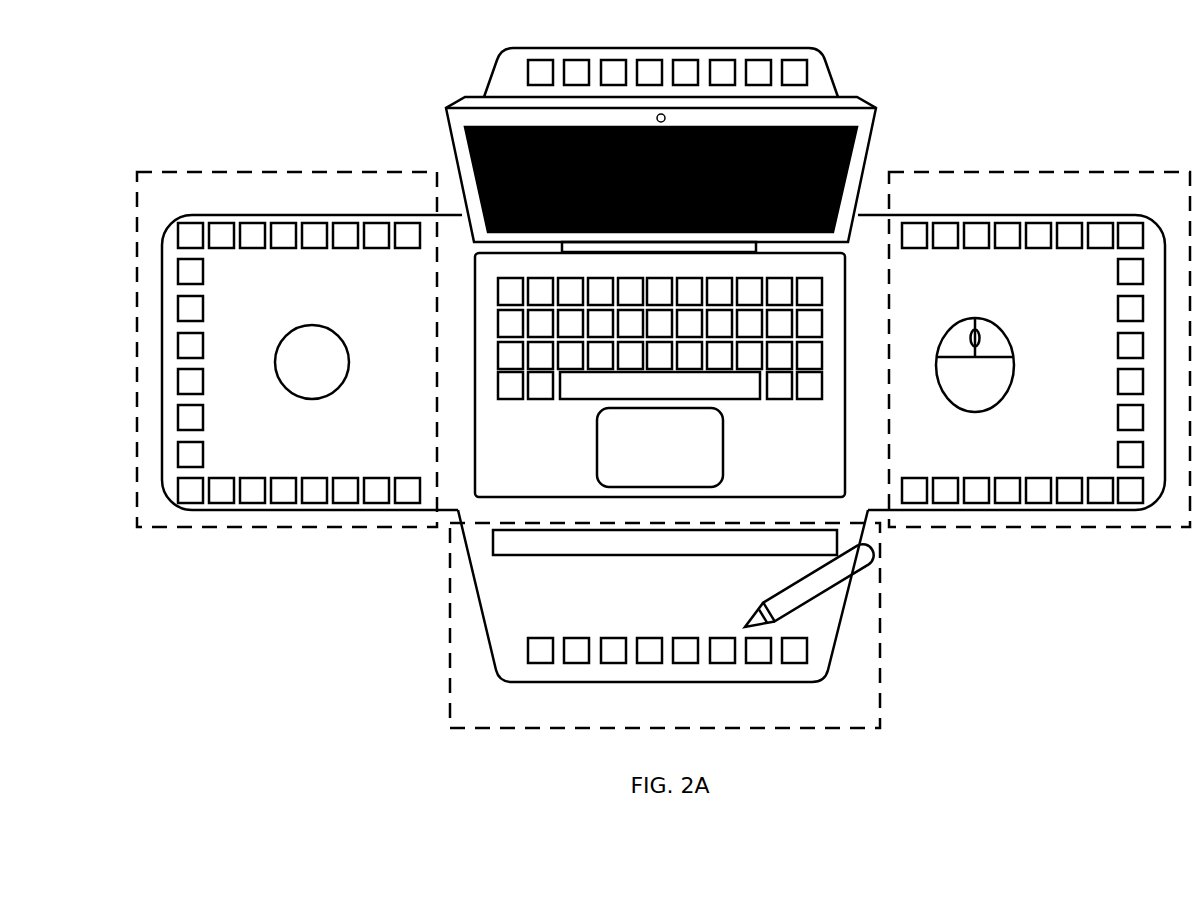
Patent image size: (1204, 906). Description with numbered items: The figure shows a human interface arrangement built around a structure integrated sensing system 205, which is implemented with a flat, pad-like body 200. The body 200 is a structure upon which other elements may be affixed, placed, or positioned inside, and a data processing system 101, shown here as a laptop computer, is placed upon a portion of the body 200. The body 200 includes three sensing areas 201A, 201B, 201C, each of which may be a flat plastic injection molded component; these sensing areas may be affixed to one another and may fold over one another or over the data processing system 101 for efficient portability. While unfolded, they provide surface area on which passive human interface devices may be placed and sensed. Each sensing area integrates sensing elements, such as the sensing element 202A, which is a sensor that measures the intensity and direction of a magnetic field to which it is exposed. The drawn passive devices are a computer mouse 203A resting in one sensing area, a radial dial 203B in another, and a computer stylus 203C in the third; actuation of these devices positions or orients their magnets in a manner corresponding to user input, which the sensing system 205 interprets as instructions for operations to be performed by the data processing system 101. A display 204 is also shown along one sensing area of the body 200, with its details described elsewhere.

The data processing system 101 is at (457, 134).
The body 200 is at (864, 264).
The sensing area 201A is at (1039, 349).
The sensing area 201B is at (287, 349).
The sensing area 201C is at (665, 625).
The sensing element 202A is at (1022, 488).
The computer mouse 203A is at (998, 387).
The radial dial 203B is at (318, 380).
The computer stylus 203C is at (835, 573).
The display 204 is at (528, 537).
The sensing system 205 is at (1022, 102).